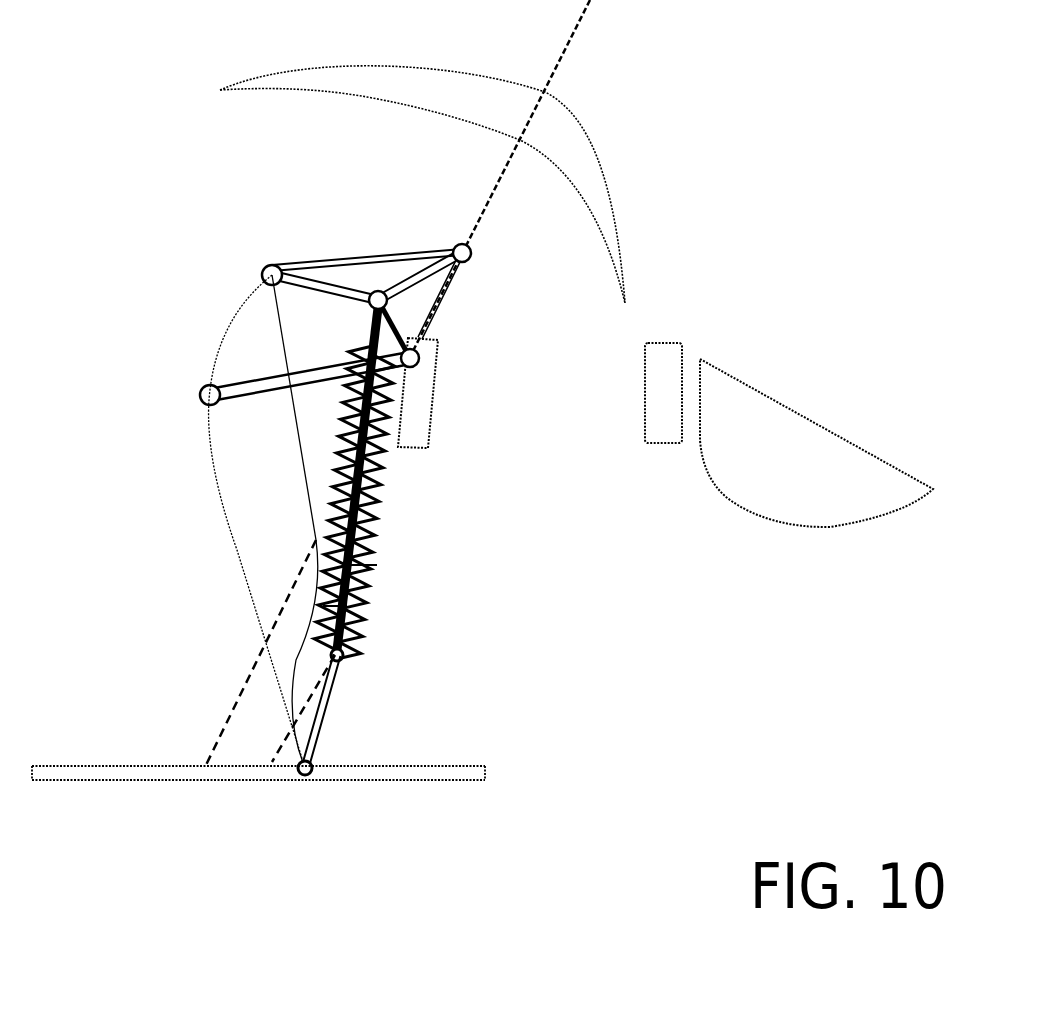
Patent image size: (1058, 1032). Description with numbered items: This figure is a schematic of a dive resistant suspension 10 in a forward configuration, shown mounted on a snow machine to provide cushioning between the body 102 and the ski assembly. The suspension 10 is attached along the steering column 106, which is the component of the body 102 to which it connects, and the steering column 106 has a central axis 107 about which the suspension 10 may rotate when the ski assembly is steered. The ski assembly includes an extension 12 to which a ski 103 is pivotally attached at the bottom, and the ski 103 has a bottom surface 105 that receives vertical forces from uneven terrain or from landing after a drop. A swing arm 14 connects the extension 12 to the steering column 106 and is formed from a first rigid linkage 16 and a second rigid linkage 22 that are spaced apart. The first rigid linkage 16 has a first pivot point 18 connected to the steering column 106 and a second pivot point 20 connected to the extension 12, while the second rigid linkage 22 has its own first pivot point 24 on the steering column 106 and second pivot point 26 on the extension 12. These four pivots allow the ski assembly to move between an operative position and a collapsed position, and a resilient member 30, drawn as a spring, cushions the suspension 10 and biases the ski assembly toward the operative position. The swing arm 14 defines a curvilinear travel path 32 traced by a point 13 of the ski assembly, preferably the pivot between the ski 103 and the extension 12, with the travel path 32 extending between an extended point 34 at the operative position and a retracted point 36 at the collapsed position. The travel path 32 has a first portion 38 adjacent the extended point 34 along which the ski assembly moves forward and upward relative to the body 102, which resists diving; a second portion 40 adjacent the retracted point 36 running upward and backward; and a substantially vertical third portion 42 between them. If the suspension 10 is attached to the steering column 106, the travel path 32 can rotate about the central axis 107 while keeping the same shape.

The suspension 10 is at (226, 225).
The extension 12 is at (240, 507).
The point 13 is at (305, 780).
The swing arm 14 is at (268, 380).
The first rigid linkage 16 is at (352, 256).
The first pivot point 18 is at (275, 266).
The second pivot point 20 is at (472, 255).
The second rigid linkage 22 is at (330, 376).
The first pivot point 24 is at (200, 393).
The second pivot point 26 is at (420, 356).
The resilient member 30 is at (390, 495).
The travel path 32 is at (290, 660).
The extended point 34 is at (300, 766).
The retracted point 36 is at (345, 567).
The second portion 40 is at (347, 608).
The third portion 42 is at (292, 698).
The first portion 38 is at (275, 758).
The body 102 is at (588, 187).
The ski 103 is at (443, 780).
The bottom surface 105 is at (165, 780).
The steering column 106 is at (478, 210).
The central axis 107 is at (250, 686).